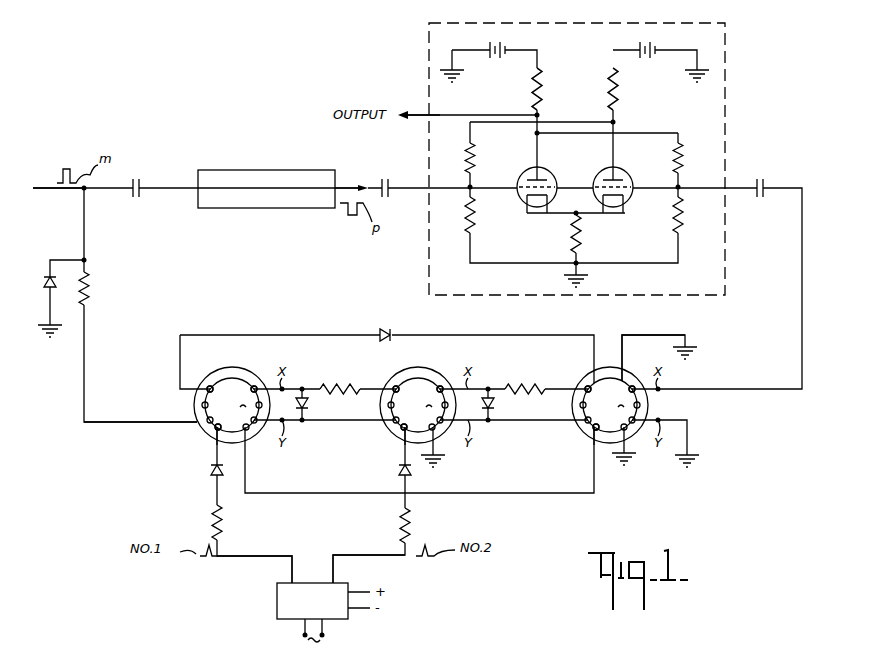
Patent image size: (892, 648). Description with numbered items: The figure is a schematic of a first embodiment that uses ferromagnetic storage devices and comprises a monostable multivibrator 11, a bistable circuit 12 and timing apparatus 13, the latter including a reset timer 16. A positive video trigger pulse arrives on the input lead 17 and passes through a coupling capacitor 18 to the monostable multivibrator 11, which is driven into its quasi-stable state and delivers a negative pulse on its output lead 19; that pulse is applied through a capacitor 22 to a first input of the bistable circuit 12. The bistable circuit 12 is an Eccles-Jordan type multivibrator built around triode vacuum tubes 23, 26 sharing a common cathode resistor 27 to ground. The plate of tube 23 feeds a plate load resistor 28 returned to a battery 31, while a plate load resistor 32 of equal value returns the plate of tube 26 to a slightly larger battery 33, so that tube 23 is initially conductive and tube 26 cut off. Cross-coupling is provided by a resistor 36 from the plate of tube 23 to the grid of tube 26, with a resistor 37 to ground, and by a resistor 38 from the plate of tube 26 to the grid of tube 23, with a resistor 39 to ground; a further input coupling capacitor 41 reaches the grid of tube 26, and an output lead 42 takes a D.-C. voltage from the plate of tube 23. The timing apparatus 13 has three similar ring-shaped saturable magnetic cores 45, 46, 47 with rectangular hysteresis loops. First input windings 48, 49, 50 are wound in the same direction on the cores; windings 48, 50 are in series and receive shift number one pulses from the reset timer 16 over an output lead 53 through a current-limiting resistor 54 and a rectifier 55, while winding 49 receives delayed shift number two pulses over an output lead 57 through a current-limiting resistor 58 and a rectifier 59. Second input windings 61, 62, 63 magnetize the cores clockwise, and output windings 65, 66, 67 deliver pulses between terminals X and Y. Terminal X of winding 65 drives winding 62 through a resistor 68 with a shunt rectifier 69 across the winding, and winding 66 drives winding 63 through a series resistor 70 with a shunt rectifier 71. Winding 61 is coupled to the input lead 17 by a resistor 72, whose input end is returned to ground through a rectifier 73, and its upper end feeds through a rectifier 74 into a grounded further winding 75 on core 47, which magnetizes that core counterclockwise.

The monostable multivibrator 11 is at (215, 172).
The bistable circuit 12 is at (428, 25).
The timing apparatus 13 is at (162, 406).
The reset timer 16 is at (277, 598).
The input lead 17 is at (44, 192).
The coupling capacitor 18 is at (142, 184).
The output lead 19 is at (354, 186).
The capacitor 22 is at (390, 185).
The triode vacuum tube 23 is at (560, 160).
The triode vacuum tube 26 is at (604, 169).
The common cathode resistor 27 is at (578, 262).
The plate load resistor 28 is at (532, 92).
The battery 31 is at (508, 48).
The plate load resistor 32 is at (617, 96).
The battery 33 is at (672, 50).
The resistor 36 is at (676, 158).
The resistor 37 is at (676, 231).
The resistor 38 is at (475, 158).
The resistor 39 is at (475, 231).
The input coupling capacitor 41 is at (763, 182).
The output lead 42 is at (405, 114).
The saturable magnetic core 45 is at (251, 377).
The saturable magnetic core 46 is at (440, 376).
The saturable magnetic core 47 is at (633, 376).
The input winding 48 is at (206, 430).
The input winding 49 is at (402, 428).
The input winding 50 is at (592, 428).
The output lead 53 is at (290, 570).
The current-limiting resistor 54 is at (222, 520).
The rectifier 55 is at (200, 471).
The output lead 57 is at (333, 570).
The current-limiting resistor 58 is at (400, 520).
The rectifier 59 is at (390, 471).
The input winding 61 is at (210, 380).
The input winding 62 is at (396, 380).
The input winding 63 is at (586, 380).
The output winding 65 is at (232, 405).
The output winding 66 is at (418, 405).
The output winding 67 is at (610, 405).
The resistor 68 is at (338, 384).
The rectifier 69 is at (314, 403).
The series resistor 70 is at (530, 384).
The shunt rectifier 71 is at (500, 403).
The resistor 72 is at (92, 282).
The rectifier 73 is at (46, 274).
The rectifier 74 is at (380, 323).
The winding 75 is at (603, 373).